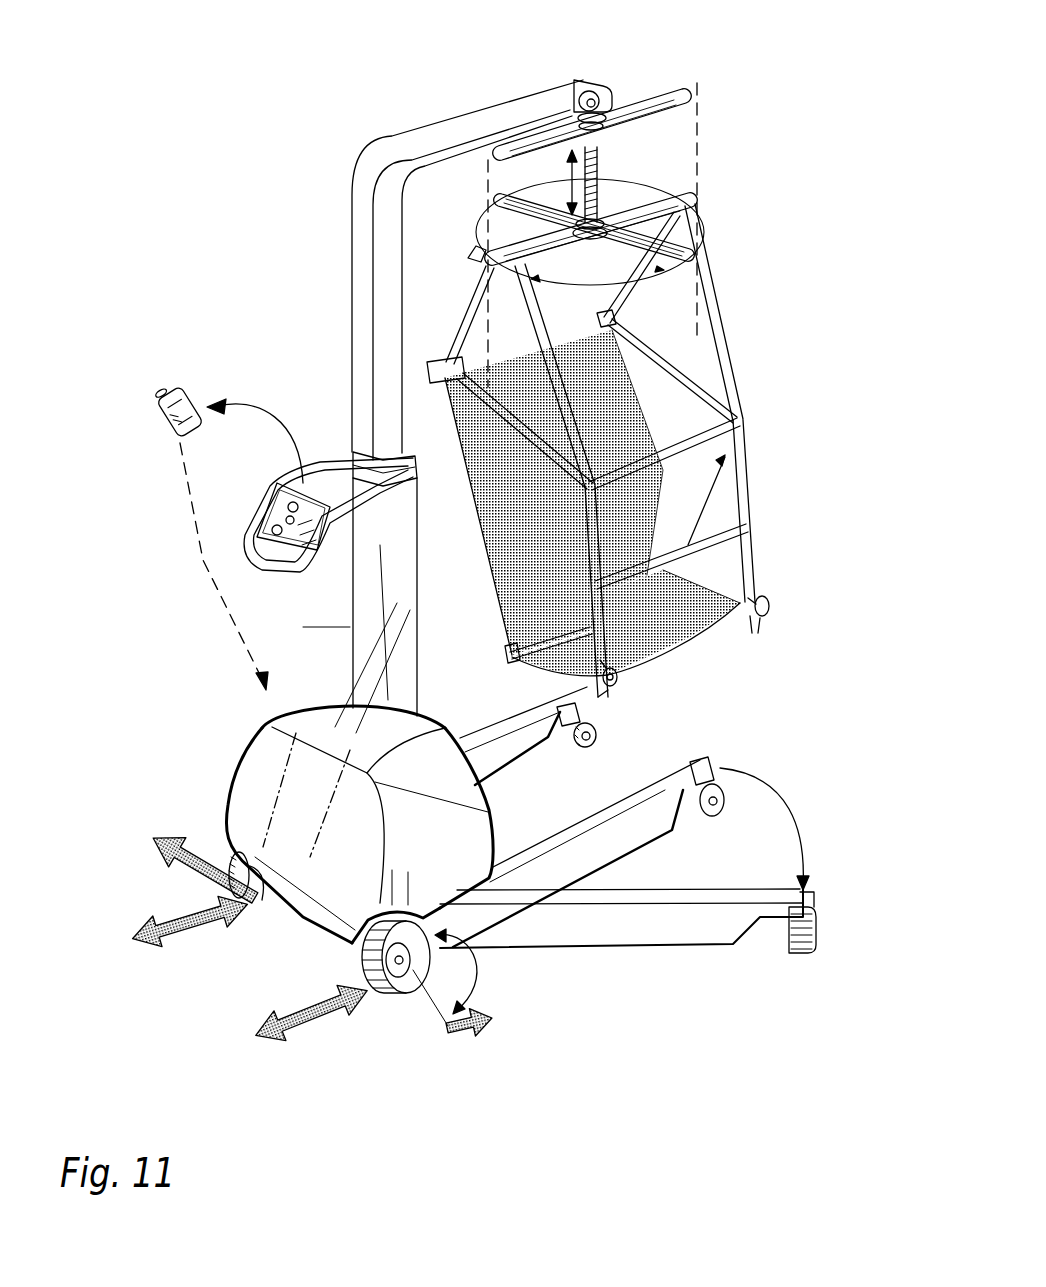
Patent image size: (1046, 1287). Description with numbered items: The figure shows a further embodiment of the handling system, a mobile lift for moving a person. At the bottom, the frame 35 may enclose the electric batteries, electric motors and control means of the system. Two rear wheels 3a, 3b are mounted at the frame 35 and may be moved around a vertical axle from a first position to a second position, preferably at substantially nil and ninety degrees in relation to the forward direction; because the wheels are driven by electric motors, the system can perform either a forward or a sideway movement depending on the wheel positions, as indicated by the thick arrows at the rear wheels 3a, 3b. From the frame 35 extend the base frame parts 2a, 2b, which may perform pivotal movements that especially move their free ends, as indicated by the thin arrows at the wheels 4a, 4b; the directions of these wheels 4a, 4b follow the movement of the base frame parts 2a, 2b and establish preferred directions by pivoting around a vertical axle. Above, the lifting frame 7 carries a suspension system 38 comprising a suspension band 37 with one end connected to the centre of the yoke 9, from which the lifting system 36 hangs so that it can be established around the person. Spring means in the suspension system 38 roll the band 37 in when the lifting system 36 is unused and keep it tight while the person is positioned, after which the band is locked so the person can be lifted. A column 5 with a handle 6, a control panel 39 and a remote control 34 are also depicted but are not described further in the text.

The lifting frame 7 is at (443, 127).
The suspension system 38 is at (577, 80).
The yoke 9 is at (692, 95).
The suspension band 37 is at (617, 173).
The lifting system 36 is at (733, 370).
The remote control unit 34 is at (197, 403).
The handle 6 is at (397, 453).
The mast column 5 is at (383, 517).
The control panel 39 is at (240, 553).
The wheel 4b is at (507, 646).
The base frame part 2b is at (363, 663).
The base frame part 2a is at (653, 790).
The wheel 4a is at (717, 767).
The frame 35 is at (240, 780).
The rear wheel 3b is at (262, 900).
The rear wheel 3a is at (423, 987).